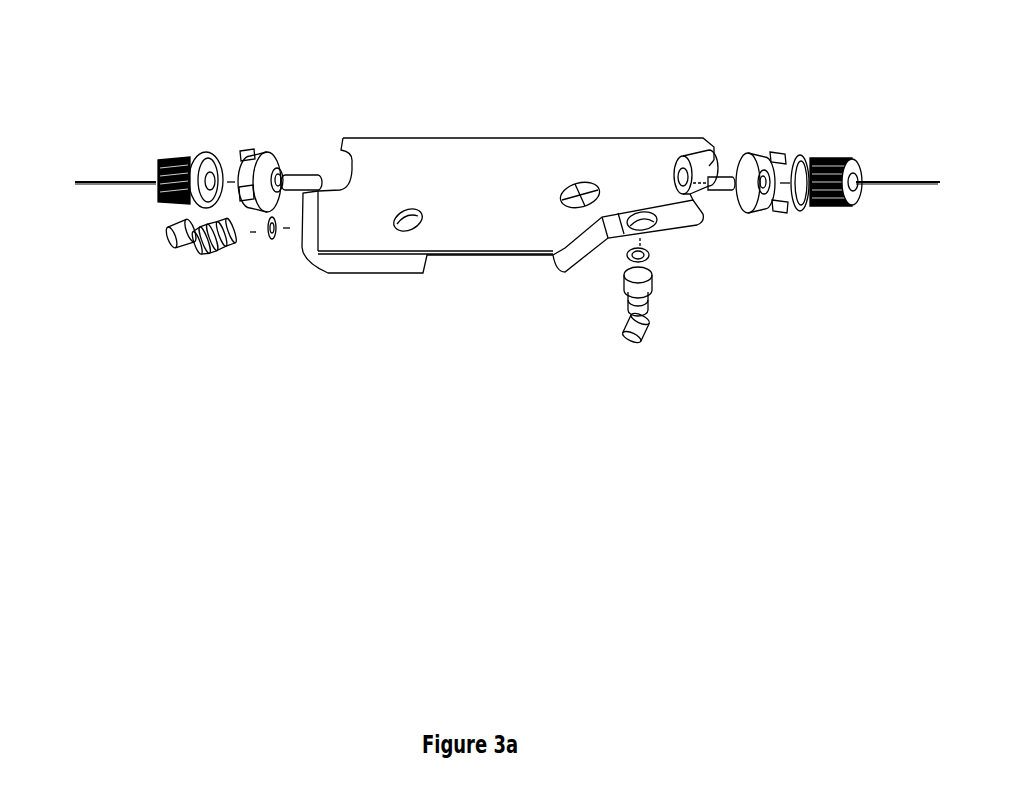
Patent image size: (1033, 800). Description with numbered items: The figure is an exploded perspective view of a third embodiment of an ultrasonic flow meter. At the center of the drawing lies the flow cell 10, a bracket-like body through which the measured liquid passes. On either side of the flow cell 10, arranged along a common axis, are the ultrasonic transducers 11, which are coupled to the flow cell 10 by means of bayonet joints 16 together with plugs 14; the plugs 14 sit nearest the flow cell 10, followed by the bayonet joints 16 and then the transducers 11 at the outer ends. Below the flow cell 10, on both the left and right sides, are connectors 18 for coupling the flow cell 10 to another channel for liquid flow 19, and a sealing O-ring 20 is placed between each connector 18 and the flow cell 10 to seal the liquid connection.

The flow cell 10 is at (465, 156).
The ultrasonic transducer 11 is at (182, 167).
The plug 14 is at (305, 178).
The bayonet joint 16 is at (257, 157).
The connector 18 is at (207, 237).
The channel for liquid flow 19 is at (170, 240).
The sealing O-ring 20 is at (273, 237).